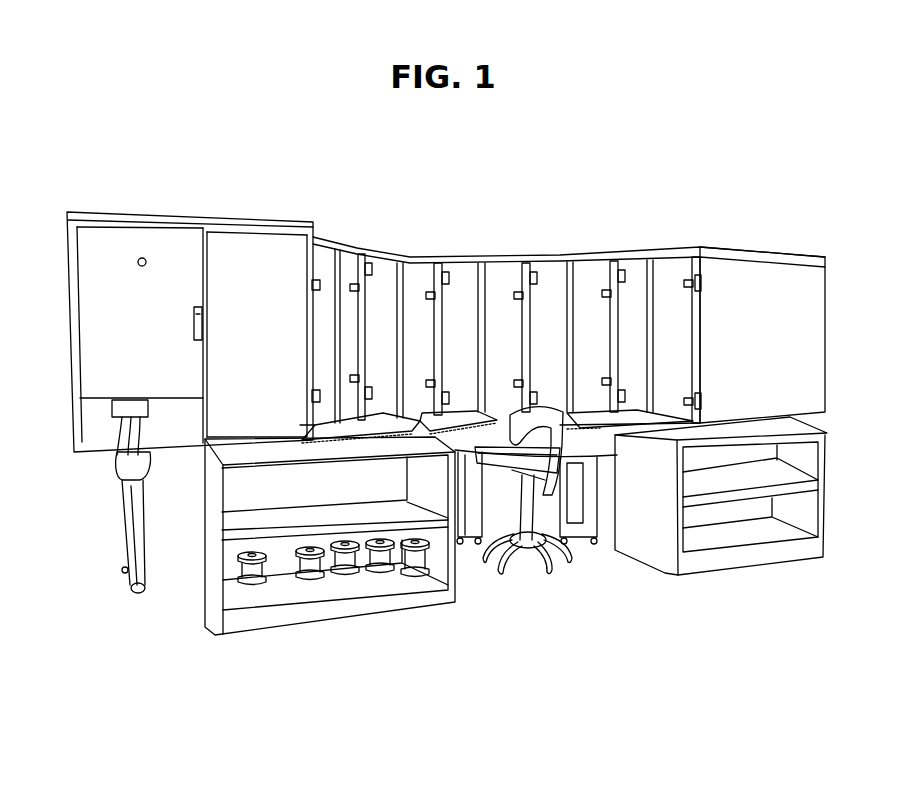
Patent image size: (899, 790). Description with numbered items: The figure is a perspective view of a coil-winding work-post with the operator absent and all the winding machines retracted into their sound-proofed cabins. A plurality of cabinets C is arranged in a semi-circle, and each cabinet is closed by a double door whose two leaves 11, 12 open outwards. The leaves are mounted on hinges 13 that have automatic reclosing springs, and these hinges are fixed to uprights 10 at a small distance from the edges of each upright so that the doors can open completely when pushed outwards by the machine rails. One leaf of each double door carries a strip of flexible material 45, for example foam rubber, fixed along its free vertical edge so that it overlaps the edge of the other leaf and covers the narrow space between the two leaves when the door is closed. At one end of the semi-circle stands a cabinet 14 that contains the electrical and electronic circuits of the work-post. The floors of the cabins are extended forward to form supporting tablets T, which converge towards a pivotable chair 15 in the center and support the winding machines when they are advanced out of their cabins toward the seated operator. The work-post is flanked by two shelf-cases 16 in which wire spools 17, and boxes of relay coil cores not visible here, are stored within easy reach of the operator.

The cabinet 14 is at (178, 247).
The strip of flexible material 45 is at (402, 252).
The uprights 10 is at (437, 262).
The double door leaf 12 is at (638, 272).
The double door leaf 11 is at (672, 273).
The hinges 13 is at (700, 283).
The cabinets C is at (805, 328).
The supporting tablets T is at (473, 412).
The pivotable chair 15 is at (540, 420).
The shelf-cases 16 is at (247, 620).
The wire spools 17 is at (413, 563).